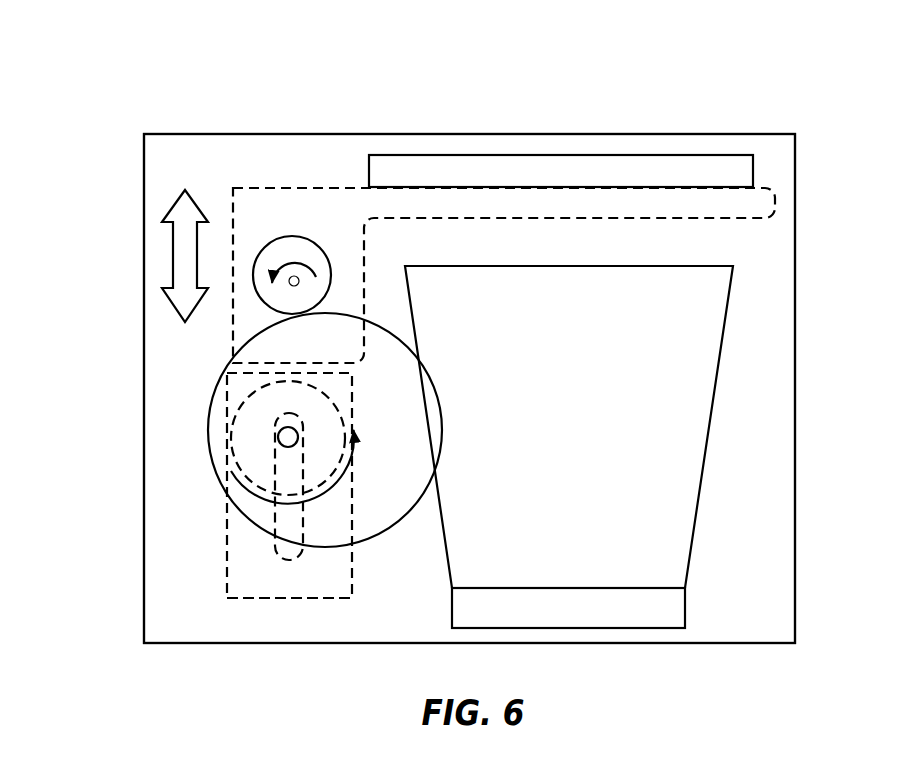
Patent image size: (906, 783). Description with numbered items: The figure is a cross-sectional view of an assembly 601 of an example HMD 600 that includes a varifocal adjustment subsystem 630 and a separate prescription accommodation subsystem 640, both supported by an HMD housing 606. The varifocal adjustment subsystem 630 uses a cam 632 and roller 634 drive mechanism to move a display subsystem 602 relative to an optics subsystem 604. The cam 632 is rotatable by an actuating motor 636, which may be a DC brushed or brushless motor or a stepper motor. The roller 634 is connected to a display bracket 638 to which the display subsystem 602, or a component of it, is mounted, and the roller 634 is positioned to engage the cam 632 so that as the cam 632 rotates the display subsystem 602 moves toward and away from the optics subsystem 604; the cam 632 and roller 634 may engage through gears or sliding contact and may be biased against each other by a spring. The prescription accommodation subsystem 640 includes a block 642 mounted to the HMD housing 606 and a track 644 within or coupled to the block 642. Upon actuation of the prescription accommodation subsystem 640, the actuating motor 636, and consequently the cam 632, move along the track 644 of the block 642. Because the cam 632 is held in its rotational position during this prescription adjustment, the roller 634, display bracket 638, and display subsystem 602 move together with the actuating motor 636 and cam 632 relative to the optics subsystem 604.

The HMD 600 is at (118, 80).
The assembly 601 is at (568, 121).
The display subsystem 602 is at (685, 173).
The optics subsystem 604 is at (663, 485).
The HMD housing 606 is at (795, 518).
The varifocal adjustment subsystem 630 is at (174, 172).
The cam 632 is at (217, 388).
The roller 634 is at (292, 236).
The actuating motor 636 is at (224, 491).
The display bracket 638 is at (300, 187).
The prescription accommodation subsystem 640 is at (216, 558).
The block 642 is at (245, 600).
The track 644 is at (283, 563).